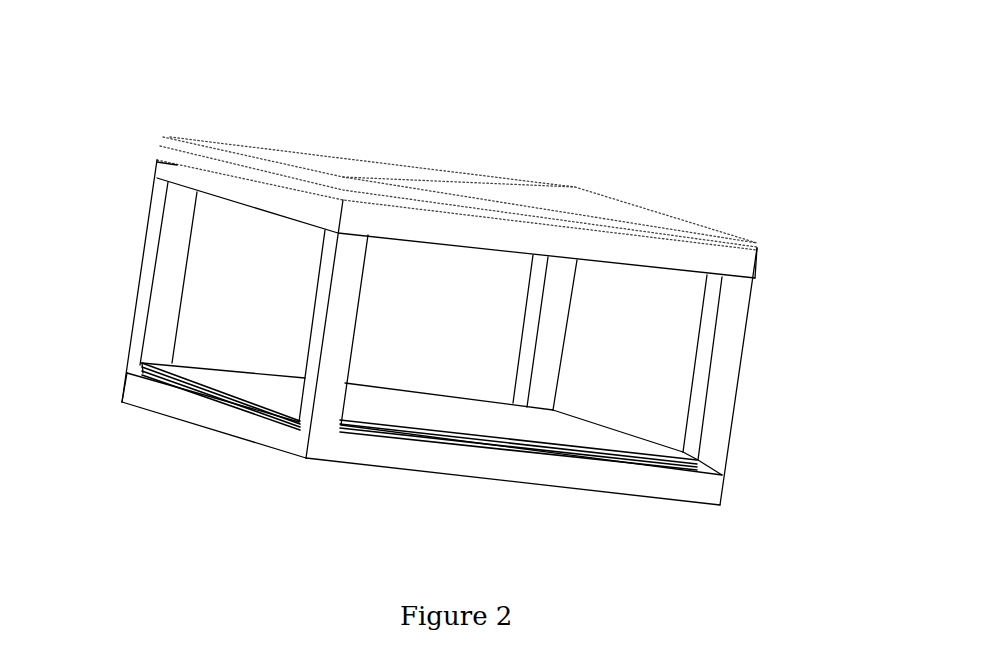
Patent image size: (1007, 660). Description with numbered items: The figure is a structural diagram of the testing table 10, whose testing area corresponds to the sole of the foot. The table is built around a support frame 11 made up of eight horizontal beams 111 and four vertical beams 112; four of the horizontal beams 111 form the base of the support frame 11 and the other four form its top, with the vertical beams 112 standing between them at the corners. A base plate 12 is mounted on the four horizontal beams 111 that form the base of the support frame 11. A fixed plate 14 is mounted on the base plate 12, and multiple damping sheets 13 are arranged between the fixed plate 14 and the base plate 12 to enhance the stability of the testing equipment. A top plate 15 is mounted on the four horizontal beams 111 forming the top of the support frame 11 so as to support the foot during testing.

The testing table 10 is at (464, 93).
The support frame 11 is at (736, 227).
The horizontal beam 111 is at (170, 164).
The vertical beam 112 is at (160, 290).
The base plate 12 is at (180, 385).
The damping sheet 13 is at (365, 433).
The fixed plate 14 is at (650, 445).
The top plate 15 is at (590, 207).